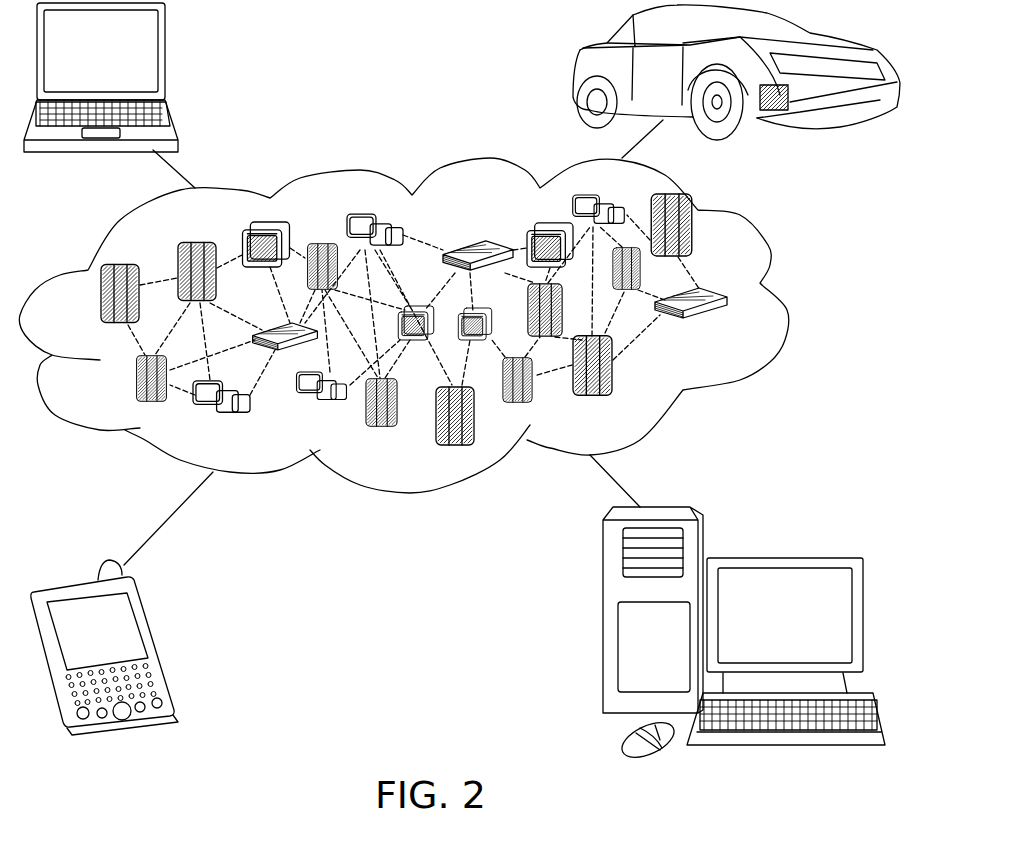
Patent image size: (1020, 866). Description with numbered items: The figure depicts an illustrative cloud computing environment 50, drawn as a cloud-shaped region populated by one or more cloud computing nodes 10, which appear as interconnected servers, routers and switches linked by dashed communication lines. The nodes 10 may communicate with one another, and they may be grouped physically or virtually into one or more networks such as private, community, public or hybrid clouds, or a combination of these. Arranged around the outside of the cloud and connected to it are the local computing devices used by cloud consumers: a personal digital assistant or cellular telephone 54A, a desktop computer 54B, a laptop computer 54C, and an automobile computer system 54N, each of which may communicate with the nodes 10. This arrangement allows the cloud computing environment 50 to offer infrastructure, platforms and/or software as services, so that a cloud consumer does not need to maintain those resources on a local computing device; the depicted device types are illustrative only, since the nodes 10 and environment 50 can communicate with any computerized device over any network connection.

The cloud computing nodes 10 is at (727, 327).
The cloud computing environment 50 is at (782, 303).
The personal digital assistant (PDA) or cellular telephone 54A is at (157, 640).
The desktop computer 54B is at (782, 558).
The laptop computer 54C is at (168, 58).
The automobile computer system 54N is at (567, 68).